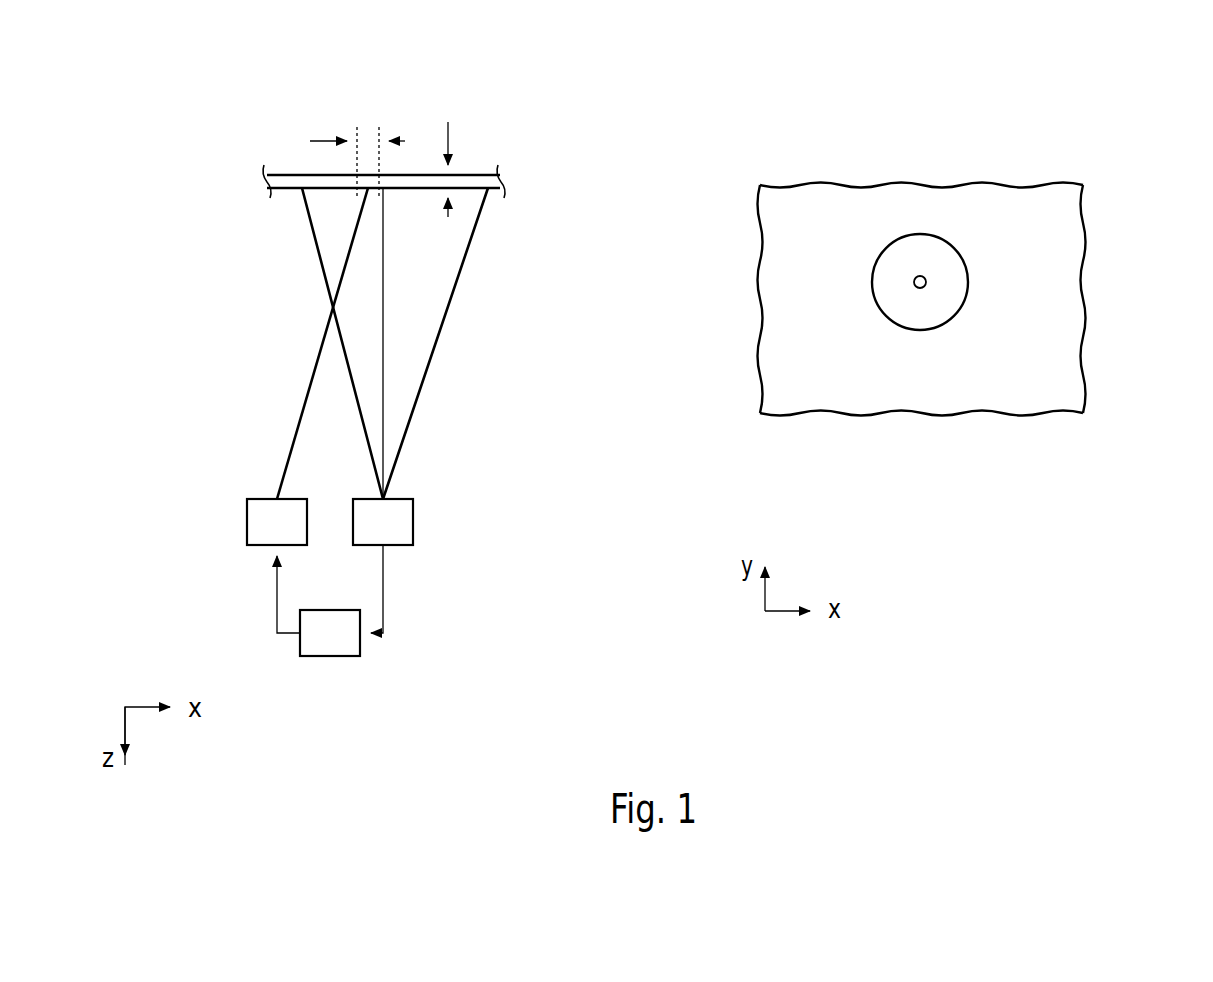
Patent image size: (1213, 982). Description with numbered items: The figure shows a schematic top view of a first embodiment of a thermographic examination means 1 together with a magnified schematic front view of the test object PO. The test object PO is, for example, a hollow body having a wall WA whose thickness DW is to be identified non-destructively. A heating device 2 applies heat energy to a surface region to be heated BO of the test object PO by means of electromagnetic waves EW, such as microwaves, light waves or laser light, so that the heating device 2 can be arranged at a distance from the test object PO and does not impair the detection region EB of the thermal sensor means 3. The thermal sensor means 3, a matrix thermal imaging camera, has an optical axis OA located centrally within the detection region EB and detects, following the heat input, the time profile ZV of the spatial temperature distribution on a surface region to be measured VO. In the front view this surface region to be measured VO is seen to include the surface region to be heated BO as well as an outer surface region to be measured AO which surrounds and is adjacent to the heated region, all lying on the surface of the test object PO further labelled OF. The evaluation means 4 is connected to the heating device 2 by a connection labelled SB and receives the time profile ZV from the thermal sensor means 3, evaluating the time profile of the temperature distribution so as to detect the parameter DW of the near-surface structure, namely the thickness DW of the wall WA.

The thermographic examination means 1 is at (138, 82).
The heating device 2 is at (247, 517).
The thermal sensor means 3 is at (413, 527).
The evaluation means 4 is at (328, 657).
The wall WA is at (272, 173).
The test object PO is at (466, 173).
The surface region to be measured VO is at (1027, 297).
The thickness of a wall DW is at (430, 169).
The surface OF is at (278, 190).
The surface region to be heated BO is at (354, 190).
The optical axis OA is at (387, 277).
The outer surface region to be measured AO is at (940, 263).
The detection region EB is at (327, 282).
The electromagnetic waves EW is at (302, 410).
The sensor signal SB is at (277, 590).
The time profile ZV is at (383, 590).